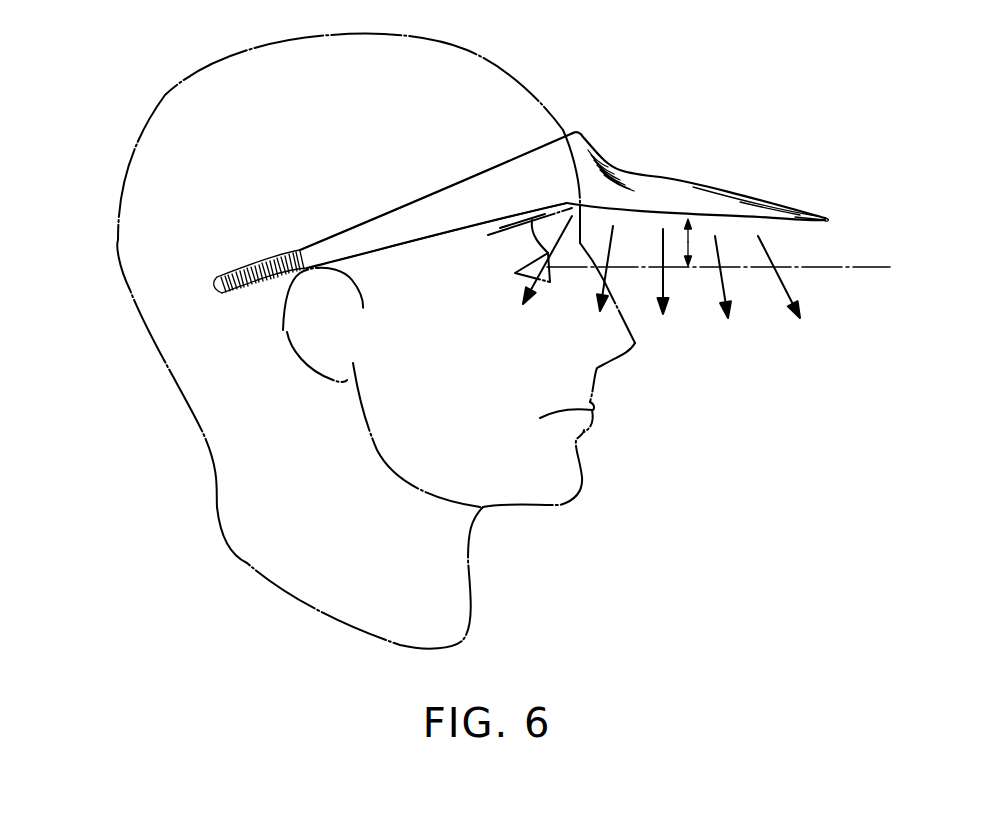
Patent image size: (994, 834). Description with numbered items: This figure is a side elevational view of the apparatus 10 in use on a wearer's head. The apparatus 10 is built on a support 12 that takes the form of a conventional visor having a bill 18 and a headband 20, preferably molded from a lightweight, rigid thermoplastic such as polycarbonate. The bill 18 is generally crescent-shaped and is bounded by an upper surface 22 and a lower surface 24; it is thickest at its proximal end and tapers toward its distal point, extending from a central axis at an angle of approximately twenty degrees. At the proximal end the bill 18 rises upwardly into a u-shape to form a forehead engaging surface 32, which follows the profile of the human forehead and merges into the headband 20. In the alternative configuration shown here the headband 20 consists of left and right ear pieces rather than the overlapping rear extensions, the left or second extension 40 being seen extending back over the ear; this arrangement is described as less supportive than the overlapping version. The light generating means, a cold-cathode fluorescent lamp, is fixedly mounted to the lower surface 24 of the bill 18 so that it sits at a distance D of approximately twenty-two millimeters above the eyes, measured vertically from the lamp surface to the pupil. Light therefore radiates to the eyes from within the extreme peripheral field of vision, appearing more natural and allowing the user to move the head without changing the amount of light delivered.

The apparatus 10 is at (647, 106).
The support 12 is at (551, 194).
The bill 18 is at (647, 187).
The headband 20 is at (382, 223).
The upper surface 22 is at (763, 200).
The lower surface 24 is at (793, 223).
The forehead engaging surface 32 is at (574, 131).
The second extension 40 is at (275, 283).
The distance D is at (680, 240).